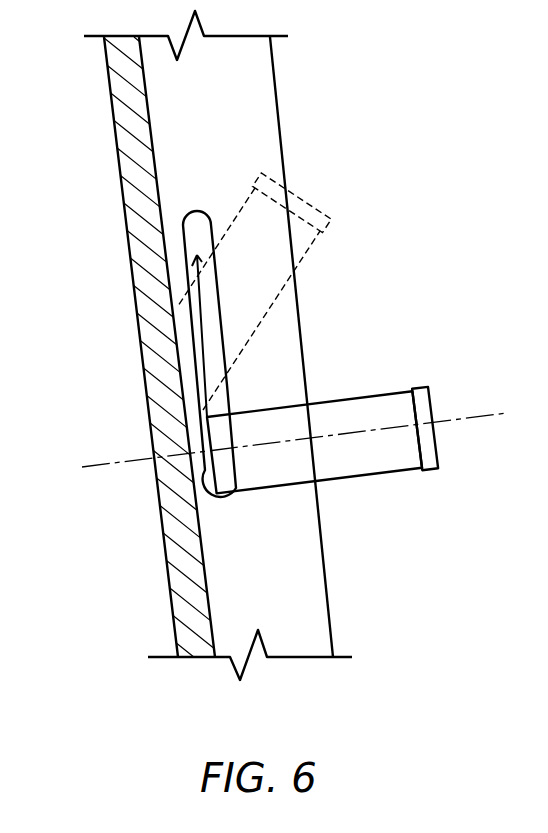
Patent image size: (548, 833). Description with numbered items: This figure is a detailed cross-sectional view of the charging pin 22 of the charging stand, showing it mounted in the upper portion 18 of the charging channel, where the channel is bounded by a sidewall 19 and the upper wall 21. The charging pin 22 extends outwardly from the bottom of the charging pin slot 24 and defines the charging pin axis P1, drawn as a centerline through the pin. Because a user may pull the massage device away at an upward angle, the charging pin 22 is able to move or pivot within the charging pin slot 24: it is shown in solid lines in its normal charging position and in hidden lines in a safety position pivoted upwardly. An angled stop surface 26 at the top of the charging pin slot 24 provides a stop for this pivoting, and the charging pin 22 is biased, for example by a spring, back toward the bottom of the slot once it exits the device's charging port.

The upper portion 18 is at (232, 100).
The sidewall 19 is at (308, 597).
The upper wall 21 is at (182, 605).
The charging pin 22 is at (397, 390).
The charging pin slot 24 is at (194, 325).
The angled stop surface 26 is at (203, 232).
The charging pin axis P1 is at (100, 465).